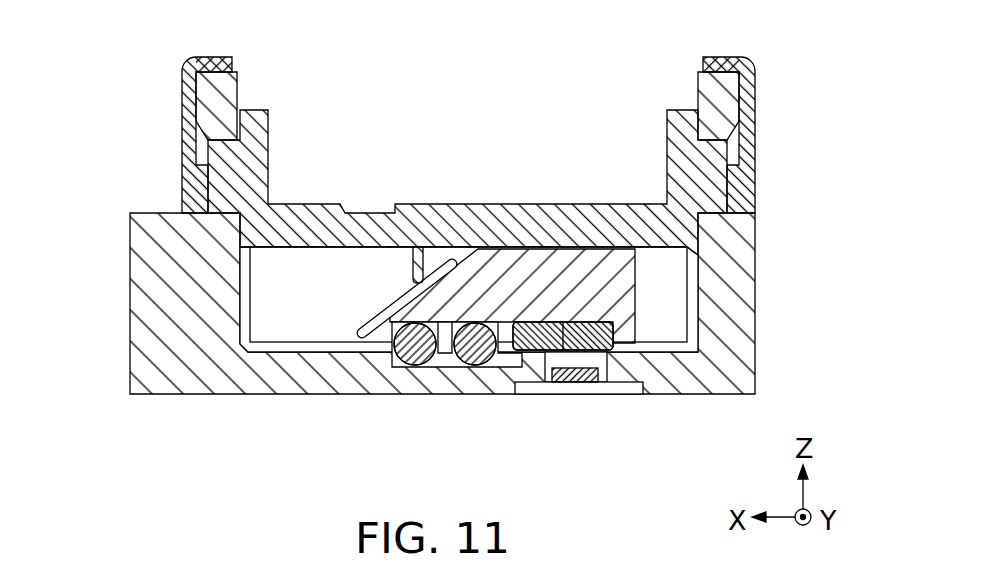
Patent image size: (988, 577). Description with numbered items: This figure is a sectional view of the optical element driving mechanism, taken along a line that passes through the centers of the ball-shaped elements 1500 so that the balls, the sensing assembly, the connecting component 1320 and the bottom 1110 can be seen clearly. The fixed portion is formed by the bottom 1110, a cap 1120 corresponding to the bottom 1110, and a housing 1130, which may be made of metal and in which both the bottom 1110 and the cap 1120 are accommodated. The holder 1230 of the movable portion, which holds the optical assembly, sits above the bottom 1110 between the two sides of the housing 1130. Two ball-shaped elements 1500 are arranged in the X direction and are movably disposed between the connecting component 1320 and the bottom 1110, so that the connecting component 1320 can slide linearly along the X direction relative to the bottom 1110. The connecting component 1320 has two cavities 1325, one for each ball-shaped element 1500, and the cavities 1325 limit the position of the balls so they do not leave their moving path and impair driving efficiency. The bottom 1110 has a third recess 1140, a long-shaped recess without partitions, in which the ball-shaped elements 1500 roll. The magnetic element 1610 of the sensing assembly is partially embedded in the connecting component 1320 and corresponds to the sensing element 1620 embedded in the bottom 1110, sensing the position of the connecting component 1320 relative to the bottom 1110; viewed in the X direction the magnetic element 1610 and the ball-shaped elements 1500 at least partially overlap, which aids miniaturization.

The bottom 1110 is at (144, 302).
The cap 1120 is at (211, 98).
The housing 1130 is at (188, 137).
The third recess 1140 is at (446, 364).
The holder 1230 is at (249, 160).
The connecting component 1320 is at (547, 275).
The cavities 1325 is at (449, 320).
The ball-shaped elements 1500 is at (414, 357).
The magnetic element 1610 is at (588, 343).
The sensing element 1620 is at (572, 374).